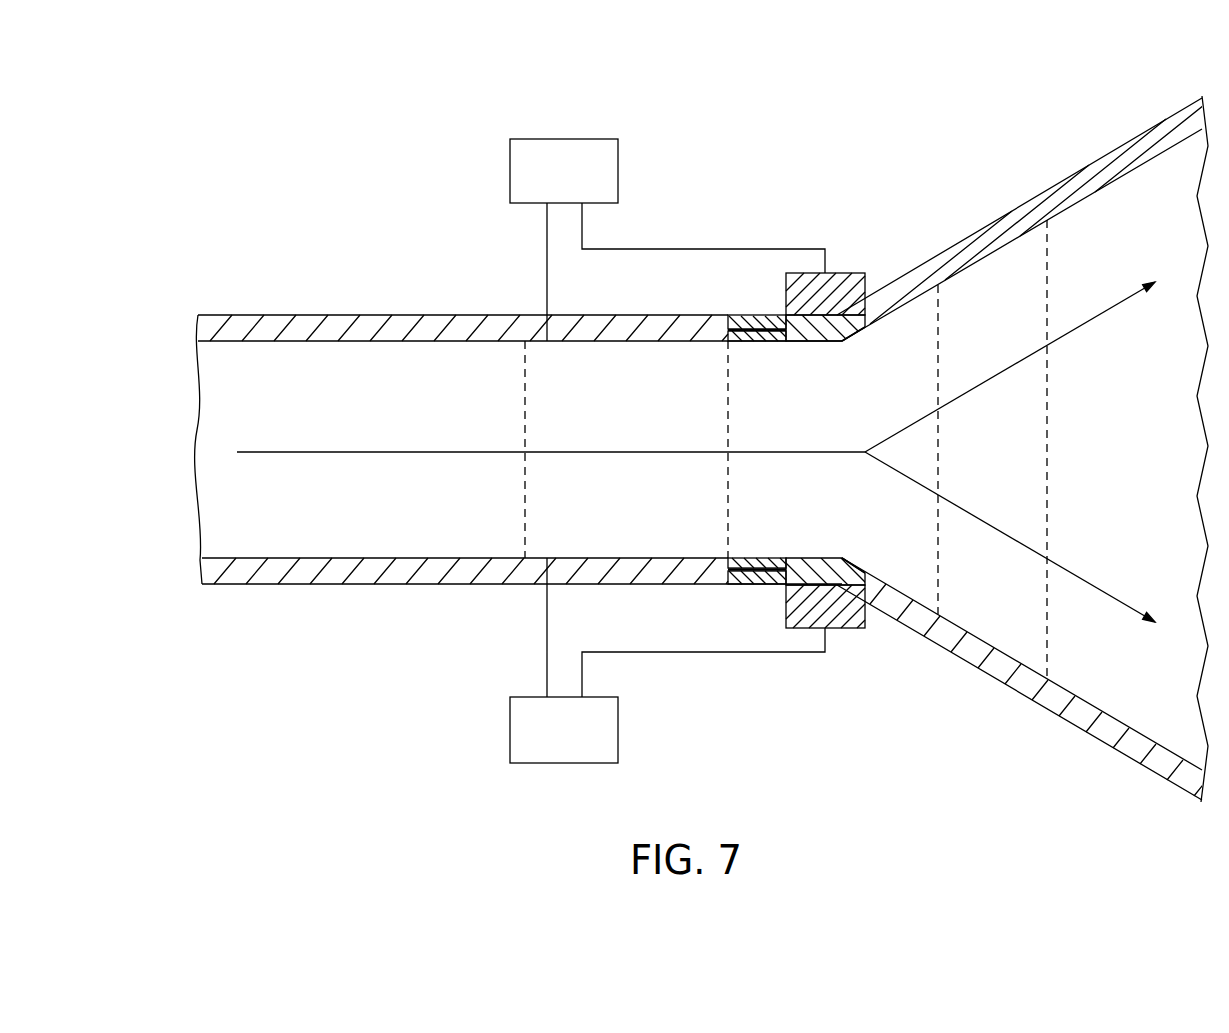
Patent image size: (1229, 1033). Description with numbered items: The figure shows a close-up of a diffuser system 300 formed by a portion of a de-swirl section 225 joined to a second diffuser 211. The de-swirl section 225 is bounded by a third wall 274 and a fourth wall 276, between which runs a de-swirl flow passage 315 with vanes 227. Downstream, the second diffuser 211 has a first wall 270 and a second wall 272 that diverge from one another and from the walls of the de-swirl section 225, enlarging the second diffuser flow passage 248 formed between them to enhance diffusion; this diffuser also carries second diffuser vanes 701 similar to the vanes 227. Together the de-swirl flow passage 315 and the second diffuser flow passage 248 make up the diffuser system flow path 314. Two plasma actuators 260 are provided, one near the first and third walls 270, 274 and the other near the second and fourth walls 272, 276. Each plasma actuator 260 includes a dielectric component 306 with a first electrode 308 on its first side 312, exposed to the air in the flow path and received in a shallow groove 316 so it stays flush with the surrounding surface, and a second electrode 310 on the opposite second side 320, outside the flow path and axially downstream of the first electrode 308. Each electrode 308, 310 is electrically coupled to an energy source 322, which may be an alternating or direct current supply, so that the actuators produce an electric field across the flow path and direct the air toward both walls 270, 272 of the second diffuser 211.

The diffuser system 300 is at (750, 97).
The second diffuser 211 is at (957, 722).
The de-swirl section 225 is at (377, 630).
The vanes 227 is at (625, 414).
The second diffuser flow passage 248 is at (1103, 312).
The plasma actuator 260 is at (782, 452).
The first wall 270 is at (1062, 190).
The second wall 272 is at (1047, 713).
The third wall 274 is at (354, 322).
The fourth wall 276 is at (406, 561).
The dielectric component 306 is at (846, 331).
The first electrode 308 is at (768, 344).
The second electrode 310 is at (842, 282).
The first side 312 is at (797, 334).
The diffuser system flow path 314 is at (862, 446).
The de-swirl flow passage 315 is at (405, 452).
The shallow groove 316 is at (745, 343).
The second side 320 is at (750, 322).
The energy source 322 is at (510, 158).
The second diffuser vanes 701 is at (1016, 322).